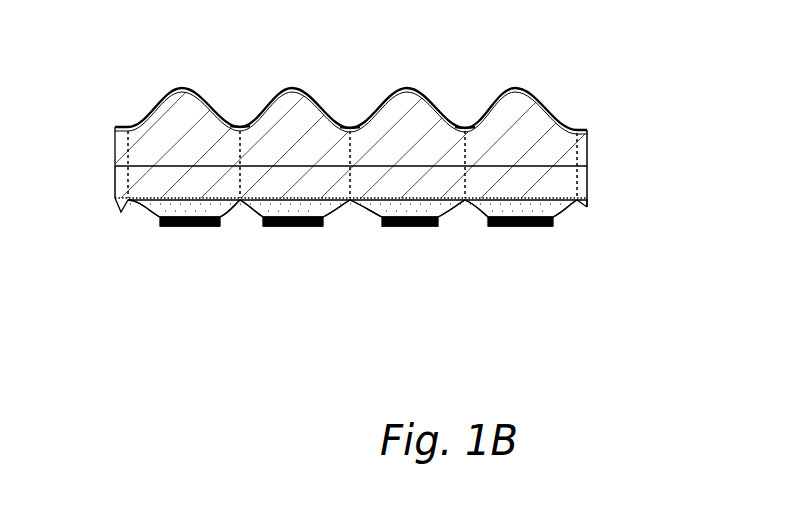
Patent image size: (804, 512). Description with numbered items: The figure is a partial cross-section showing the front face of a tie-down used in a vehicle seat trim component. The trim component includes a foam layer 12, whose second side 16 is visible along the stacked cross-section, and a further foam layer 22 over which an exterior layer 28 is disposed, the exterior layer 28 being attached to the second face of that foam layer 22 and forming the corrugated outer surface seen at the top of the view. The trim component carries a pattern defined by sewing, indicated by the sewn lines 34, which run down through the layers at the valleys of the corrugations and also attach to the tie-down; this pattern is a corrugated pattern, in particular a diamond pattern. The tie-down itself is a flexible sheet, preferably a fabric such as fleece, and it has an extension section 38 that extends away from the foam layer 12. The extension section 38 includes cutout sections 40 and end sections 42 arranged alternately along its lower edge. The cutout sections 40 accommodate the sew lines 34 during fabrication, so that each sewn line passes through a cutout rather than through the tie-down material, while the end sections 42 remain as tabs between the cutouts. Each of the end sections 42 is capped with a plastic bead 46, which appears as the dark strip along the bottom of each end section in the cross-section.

The foam layer 12 is at (115, 188).
The second side 16 is at (117, 150).
The foam layer 22 is at (588, 143).
The exterior layer 28 is at (533, 87).
The sewn lines 34 is at (243, 127).
The extension section 38 is at (108, 217).
The cutout sections 40 is at (570, 230).
The end sections 42 is at (517, 243).
The plastic bead 46 is at (550, 322).